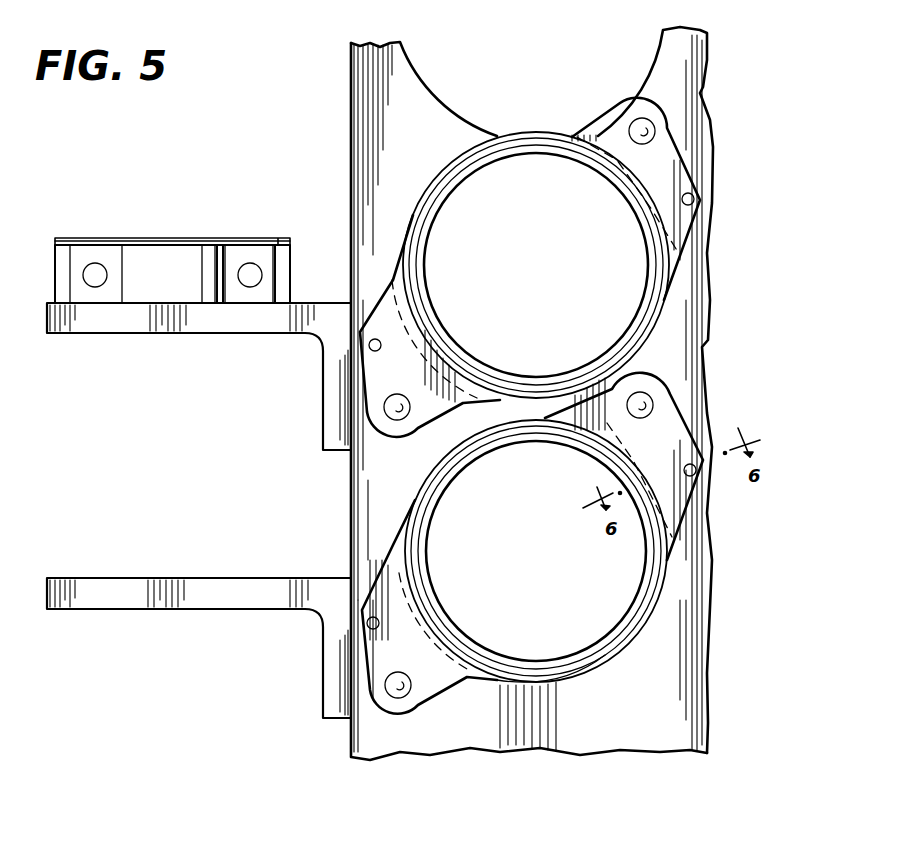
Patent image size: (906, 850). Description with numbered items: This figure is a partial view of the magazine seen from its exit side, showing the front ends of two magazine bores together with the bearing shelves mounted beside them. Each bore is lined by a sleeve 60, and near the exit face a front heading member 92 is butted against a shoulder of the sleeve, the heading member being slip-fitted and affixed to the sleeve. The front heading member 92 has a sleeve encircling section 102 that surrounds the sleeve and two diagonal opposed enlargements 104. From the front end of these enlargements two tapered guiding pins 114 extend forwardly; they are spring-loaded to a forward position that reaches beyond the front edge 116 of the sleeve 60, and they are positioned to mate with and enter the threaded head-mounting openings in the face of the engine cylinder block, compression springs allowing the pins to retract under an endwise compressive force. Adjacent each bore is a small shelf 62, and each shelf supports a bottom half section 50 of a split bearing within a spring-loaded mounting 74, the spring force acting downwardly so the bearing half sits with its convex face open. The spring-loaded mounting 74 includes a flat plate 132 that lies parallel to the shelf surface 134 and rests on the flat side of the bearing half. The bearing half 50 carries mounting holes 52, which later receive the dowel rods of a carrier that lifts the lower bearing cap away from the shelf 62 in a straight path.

The bottom half section of split bearing 50 is at (158, 267).
The mounting holes 52 is at (252, 273).
The sleeve 60 is at (207, 320).
The shelf 62 is at (101, 337).
The spring-loaded mounting 74 is at (83, 240).
The front heading member 92 is at (668, 240).
The sleeve encircling section 102 is at (597, 663).
The diagonal opposed enlargements 104 is at (400, 650).
The tapered guiding pins 114 is at (643, 135).
The front edge of sleeve 116 is at (640, 320).
The flat plate 132 is at (210, 238).
The shelf surface 134 is at (335, 270).